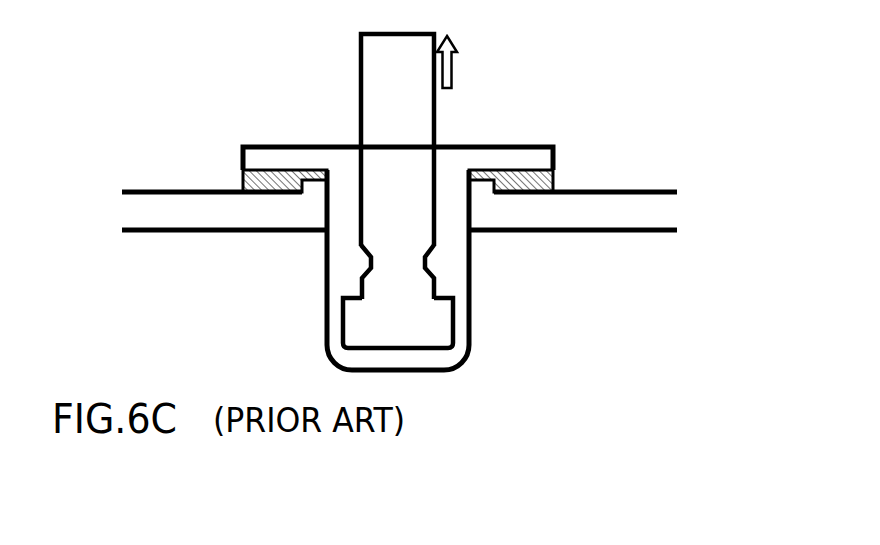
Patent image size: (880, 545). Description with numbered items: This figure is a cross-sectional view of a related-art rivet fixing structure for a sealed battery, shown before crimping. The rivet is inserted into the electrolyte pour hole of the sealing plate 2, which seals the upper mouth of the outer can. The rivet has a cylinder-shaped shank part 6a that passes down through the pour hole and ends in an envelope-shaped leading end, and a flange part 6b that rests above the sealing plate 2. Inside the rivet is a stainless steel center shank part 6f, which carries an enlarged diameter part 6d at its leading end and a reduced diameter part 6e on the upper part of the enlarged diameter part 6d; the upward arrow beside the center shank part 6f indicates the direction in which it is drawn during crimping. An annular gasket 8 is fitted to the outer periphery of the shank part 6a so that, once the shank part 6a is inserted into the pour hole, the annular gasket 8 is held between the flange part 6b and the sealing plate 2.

The sealing plate 2 is at (165, 220).
The shank part 6a is at (457, 220).
The flange part 6b is at (263, 157).
The enlarged diameter part 6d is at (428, 325).
The reduced diameter part 6e is at (367, 263).
The center shank part 6f is at (375, 52).
The annular gasket 8 is at (247, 172).